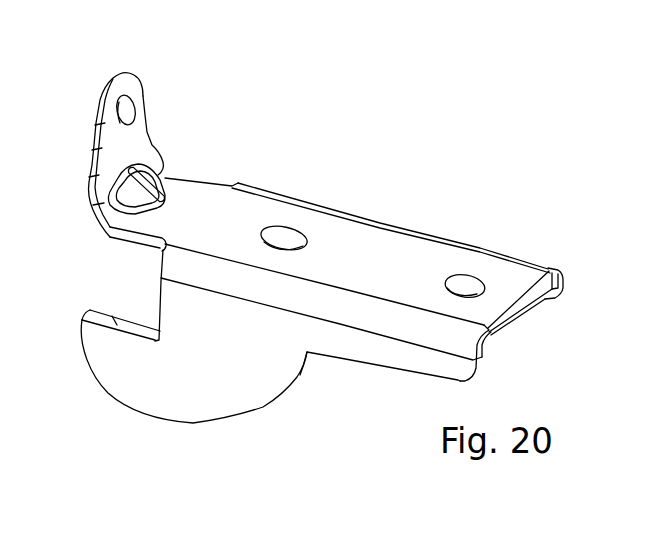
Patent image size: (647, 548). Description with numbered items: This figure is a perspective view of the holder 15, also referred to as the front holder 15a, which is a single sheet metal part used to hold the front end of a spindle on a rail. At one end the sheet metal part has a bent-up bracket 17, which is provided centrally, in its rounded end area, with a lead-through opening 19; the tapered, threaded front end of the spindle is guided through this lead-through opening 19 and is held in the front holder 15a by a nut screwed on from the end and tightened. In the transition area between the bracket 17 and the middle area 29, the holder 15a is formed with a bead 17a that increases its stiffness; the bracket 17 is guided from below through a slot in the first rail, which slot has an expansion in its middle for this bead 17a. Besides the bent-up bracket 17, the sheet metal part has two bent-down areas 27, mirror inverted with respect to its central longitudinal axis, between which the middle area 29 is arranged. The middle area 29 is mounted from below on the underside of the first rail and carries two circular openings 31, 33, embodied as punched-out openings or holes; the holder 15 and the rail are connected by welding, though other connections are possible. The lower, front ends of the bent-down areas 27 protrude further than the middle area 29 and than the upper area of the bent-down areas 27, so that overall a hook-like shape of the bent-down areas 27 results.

The holder 15 is at (356, 227).
The front holder 15a is at (387, 240).
The bent-up bracket 17 is at (145, 140).
The bead 17a is at (152, 190).
The lead-through opening 19 is at (122, 103).
The bent-down areas 27 is at (167, 393).
The middle area 29 is at (455, 250).
The opening 31 is at (288, 227).
The opening 33 is at (484, 282).